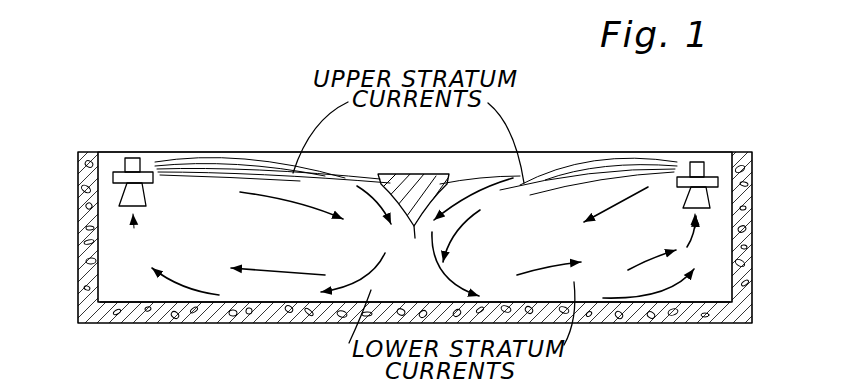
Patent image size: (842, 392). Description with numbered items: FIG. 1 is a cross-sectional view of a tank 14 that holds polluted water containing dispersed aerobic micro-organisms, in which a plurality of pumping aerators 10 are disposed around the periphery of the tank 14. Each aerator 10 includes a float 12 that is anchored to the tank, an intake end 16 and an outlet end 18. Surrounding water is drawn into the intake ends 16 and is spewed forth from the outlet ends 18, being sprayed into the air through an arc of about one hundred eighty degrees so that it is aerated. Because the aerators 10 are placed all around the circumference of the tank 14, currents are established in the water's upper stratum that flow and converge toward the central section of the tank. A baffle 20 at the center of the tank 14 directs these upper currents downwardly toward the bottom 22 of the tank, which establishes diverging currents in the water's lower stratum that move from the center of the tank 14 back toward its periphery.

The pumping aerator 10 is at (166, 175).
The float 12 is at (113, 177).
The tank 14 is at (754, 236).
The intake end 16 is at (146, 196).
The outlet end 18 is at (125, 160).
The baffle 20 is at (425, 172).
The bottom 22 is at (268, 297).